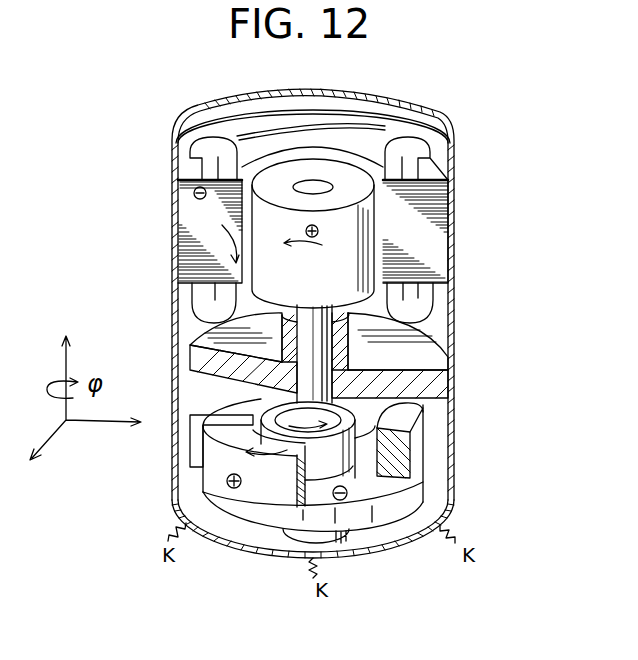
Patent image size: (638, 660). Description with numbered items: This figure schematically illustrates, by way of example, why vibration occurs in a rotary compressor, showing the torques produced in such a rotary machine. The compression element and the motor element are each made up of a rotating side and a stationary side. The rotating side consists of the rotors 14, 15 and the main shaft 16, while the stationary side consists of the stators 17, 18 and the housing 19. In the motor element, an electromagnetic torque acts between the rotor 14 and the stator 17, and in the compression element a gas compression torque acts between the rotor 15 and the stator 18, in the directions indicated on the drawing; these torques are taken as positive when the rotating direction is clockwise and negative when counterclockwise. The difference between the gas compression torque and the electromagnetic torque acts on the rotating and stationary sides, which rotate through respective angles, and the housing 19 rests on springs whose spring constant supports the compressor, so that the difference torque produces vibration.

The rotor 14 is at (348, 177).
The rotor 15 is at (356, 458).
The main shaft 16 is at (398, 336).
The stator 17 is at (432, 242).
The stator 18 is at (423, 448).
The housing 19 is at (453, 155).